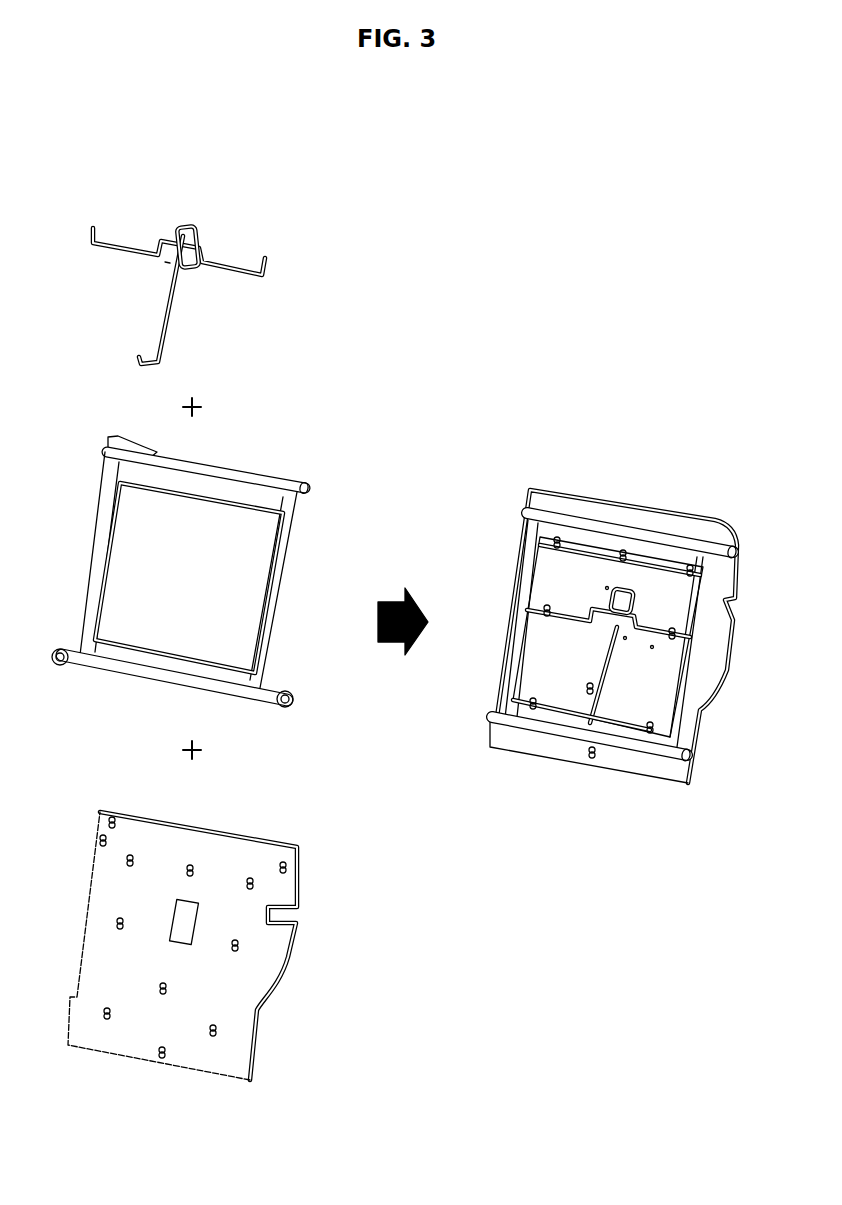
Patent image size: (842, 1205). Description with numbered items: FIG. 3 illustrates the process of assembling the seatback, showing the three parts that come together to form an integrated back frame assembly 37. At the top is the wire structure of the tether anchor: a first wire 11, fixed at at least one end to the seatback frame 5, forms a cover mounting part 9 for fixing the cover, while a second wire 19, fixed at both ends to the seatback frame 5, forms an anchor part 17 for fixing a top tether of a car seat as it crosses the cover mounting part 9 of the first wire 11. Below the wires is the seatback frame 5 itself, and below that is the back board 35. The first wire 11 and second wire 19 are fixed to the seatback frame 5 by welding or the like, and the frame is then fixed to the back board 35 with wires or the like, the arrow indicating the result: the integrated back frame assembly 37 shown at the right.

The seatback frame 5 is at (155, 673).
The cover mounting part 9 is at (170, 246).
The first wire 11 is at (168, 293).
The anchor part 17 is at (183, 225).
The second wire 19 is at (128, 253).
The back board 35 is at (220, 847).
The back frame assembly 37 is at (535, 763).